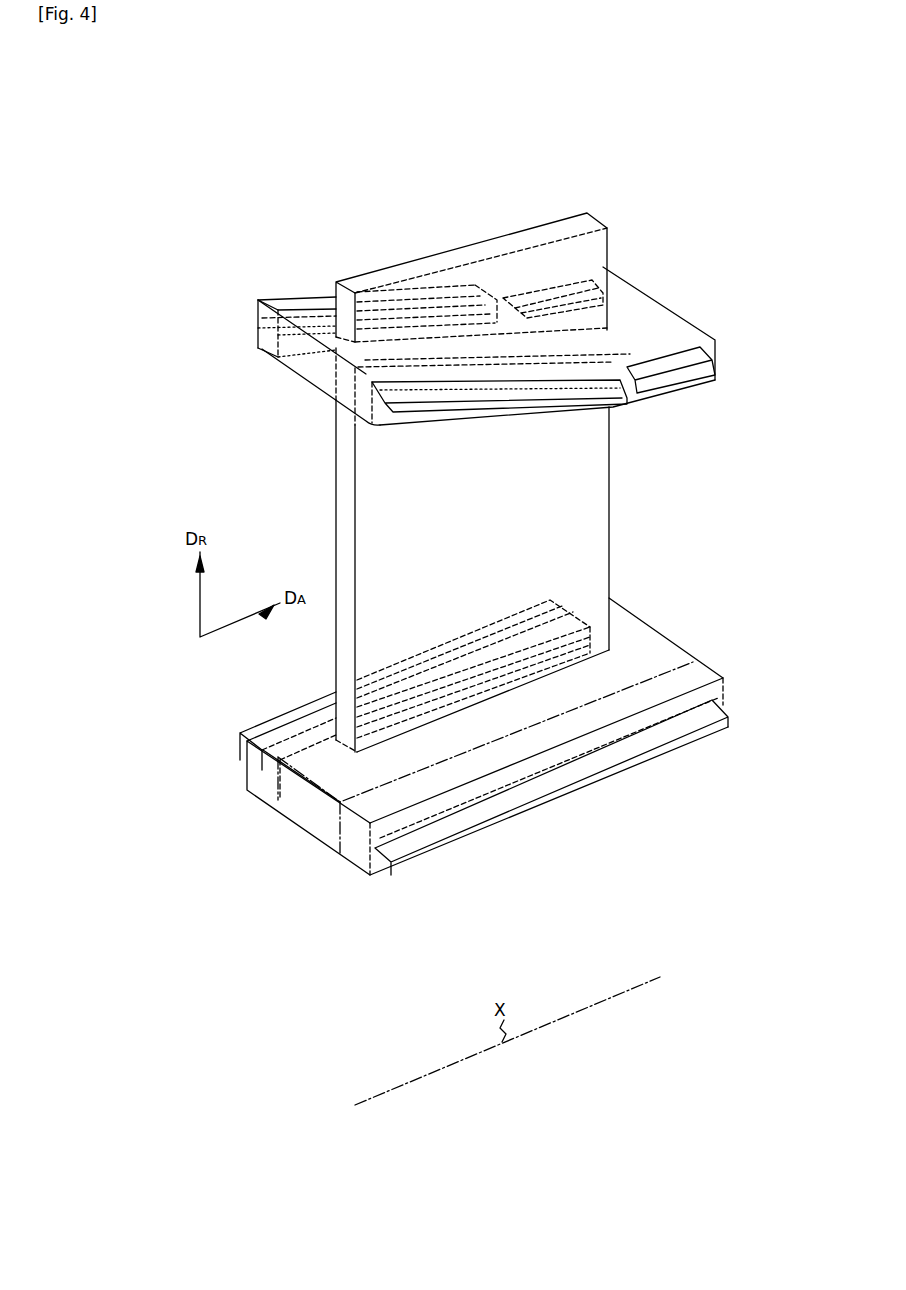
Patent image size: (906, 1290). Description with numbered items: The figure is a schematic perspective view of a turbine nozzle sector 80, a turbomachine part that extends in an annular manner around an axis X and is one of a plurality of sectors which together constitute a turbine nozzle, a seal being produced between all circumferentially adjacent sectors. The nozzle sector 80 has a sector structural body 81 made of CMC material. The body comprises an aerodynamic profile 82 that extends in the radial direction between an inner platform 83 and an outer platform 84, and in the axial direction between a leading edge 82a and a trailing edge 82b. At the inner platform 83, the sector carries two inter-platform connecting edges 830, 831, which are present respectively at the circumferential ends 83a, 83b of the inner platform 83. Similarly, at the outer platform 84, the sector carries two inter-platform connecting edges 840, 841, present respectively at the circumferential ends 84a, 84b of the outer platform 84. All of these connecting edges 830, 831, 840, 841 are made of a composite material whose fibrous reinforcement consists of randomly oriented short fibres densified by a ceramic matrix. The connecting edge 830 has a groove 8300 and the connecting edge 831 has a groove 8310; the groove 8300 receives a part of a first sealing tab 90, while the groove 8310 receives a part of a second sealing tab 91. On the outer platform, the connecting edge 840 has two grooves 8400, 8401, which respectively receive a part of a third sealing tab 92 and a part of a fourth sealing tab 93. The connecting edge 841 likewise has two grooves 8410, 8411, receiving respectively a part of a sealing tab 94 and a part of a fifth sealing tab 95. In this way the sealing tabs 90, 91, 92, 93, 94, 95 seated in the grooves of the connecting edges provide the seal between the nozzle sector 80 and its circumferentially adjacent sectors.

The turbine nozzle sector 80 is at (676, 166).
The sector structural body 81 is at (628, 512).
The aerodynamic profile 82 is at (570, 460).
The leading edge 82a is at (346, 508).
The trailing edge 82b is at (610, 545).
The inner platform 83 is at (644, 632).
The inter-platform connecting edge 830 is at (700, 668).
The groove 8300 is at (706, 692).
The inter-platform connecting edge 831 is at (246, 778).
The groove 8310 is at (246, 770).
The circumferential end 83a is at (342, 830).
The circumferential end 83b is at (266, 790).
The outer platform 84 is at (666, 314).
The inter-platform connecting edge 840 is at (708, 336).
The groove 8400 is at (322, 388).
The inter-platform connecting edge 841 is at (258, 332).
The groove 8410 is at (256, 322).
The groove 8411 is at (606, 268).
The groove 8401 is at (644, 352).
The circumferential end 84a is at (342, 408).
The circumferential end 84b is at (264, 350).
The first sealing tab 90 is at (540, 796).
The second sealing tab 91 is at (240, 738).
The third sealing tab 92 is at (470, 404).
The fourth sealing tab 93 is at (718, 373).
The fourth sealing tab 94 is at (258, 304).
The fifth sealing tab 95 is at (530, 282).